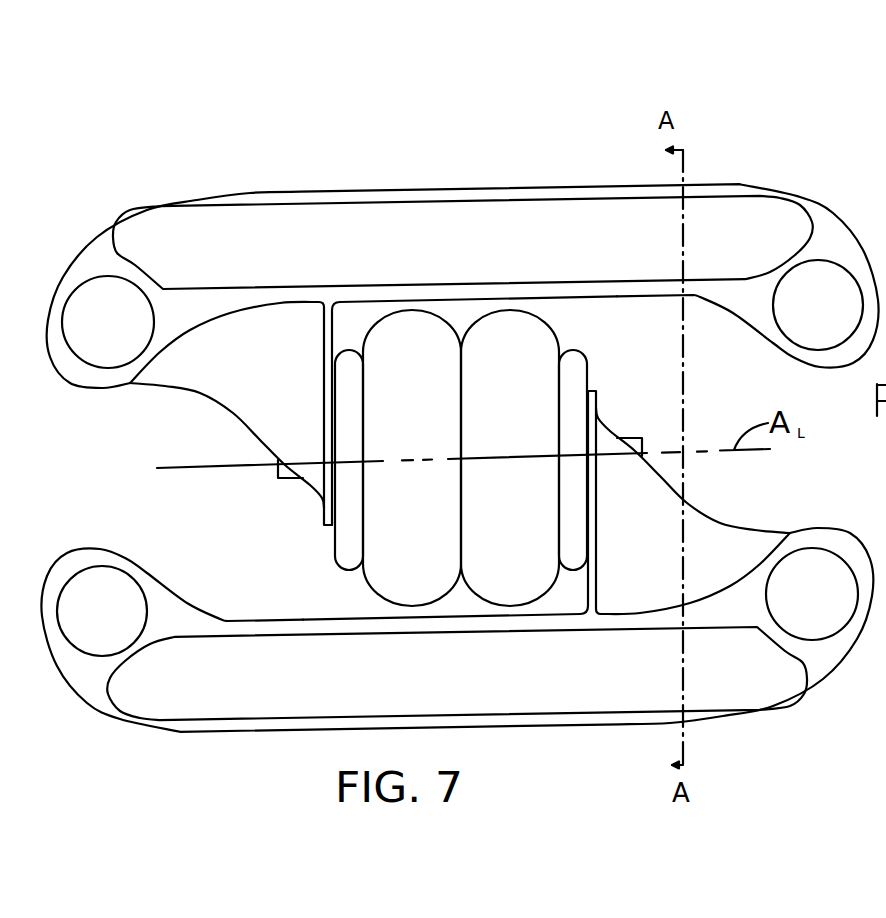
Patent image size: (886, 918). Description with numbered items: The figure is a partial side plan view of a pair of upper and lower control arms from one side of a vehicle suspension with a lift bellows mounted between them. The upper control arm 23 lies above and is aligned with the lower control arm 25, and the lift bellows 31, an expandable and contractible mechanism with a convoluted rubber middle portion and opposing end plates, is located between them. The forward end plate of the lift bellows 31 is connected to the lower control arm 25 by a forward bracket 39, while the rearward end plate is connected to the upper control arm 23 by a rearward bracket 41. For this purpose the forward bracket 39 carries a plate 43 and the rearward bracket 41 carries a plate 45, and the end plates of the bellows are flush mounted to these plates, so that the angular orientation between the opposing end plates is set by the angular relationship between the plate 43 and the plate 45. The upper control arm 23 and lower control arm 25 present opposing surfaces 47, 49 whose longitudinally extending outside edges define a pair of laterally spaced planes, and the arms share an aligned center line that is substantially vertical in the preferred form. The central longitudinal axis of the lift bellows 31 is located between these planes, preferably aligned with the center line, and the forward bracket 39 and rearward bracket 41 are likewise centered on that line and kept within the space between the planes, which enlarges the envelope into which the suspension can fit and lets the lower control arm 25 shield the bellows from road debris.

The upper control arm 23 is at (447, 267).
The lower control arm 25 is at (447, 697).
The lift bellows 31 is at (430, 532).
The forward bracket 39 is at (657, 562).
The rearward bracket 41 is at (263, 377).
The plate 43 is at (576, 391).
The plate 45 is at (345, 533).
The opposing surface 47 is at (612, 297).
The opposing surface 49 is at (283, 620).